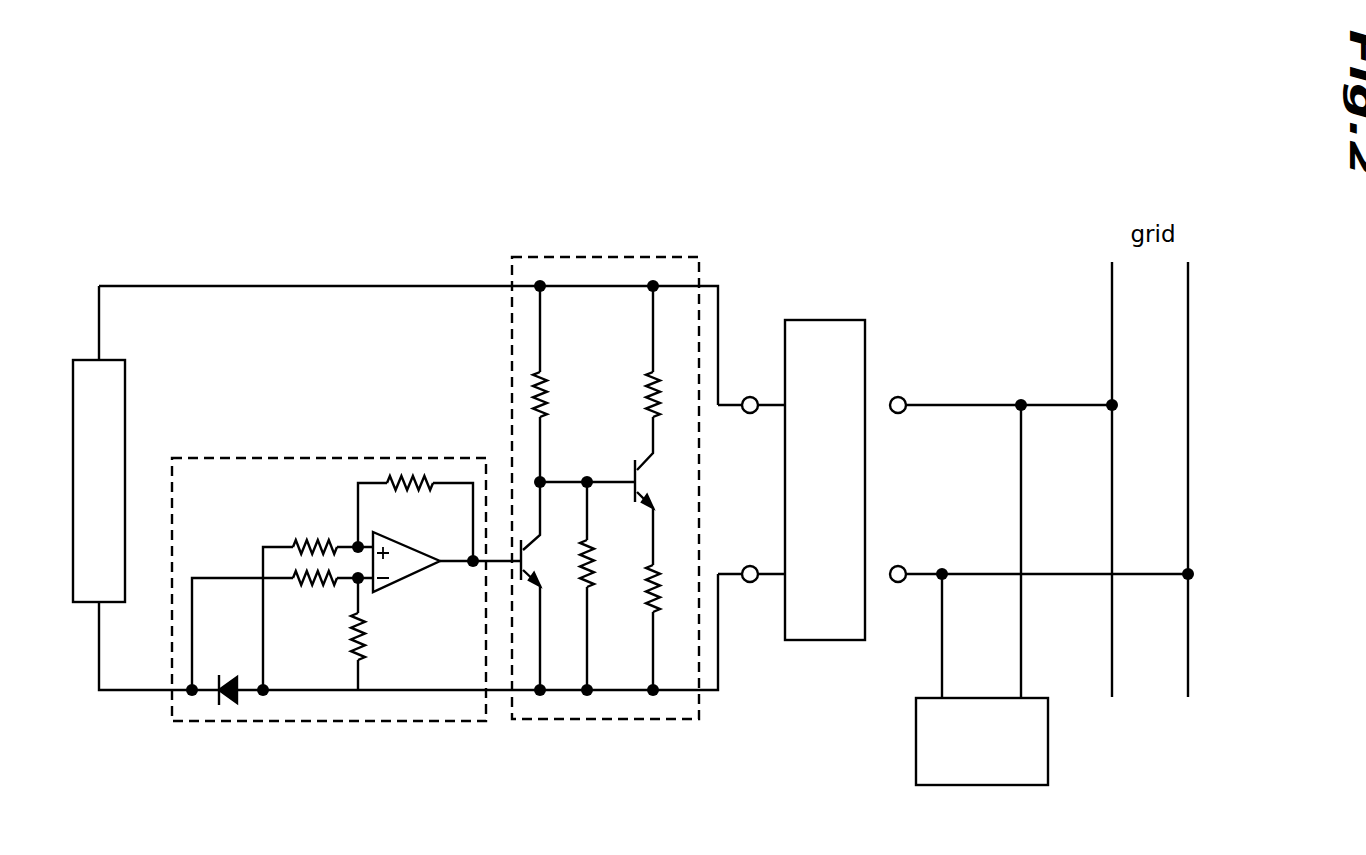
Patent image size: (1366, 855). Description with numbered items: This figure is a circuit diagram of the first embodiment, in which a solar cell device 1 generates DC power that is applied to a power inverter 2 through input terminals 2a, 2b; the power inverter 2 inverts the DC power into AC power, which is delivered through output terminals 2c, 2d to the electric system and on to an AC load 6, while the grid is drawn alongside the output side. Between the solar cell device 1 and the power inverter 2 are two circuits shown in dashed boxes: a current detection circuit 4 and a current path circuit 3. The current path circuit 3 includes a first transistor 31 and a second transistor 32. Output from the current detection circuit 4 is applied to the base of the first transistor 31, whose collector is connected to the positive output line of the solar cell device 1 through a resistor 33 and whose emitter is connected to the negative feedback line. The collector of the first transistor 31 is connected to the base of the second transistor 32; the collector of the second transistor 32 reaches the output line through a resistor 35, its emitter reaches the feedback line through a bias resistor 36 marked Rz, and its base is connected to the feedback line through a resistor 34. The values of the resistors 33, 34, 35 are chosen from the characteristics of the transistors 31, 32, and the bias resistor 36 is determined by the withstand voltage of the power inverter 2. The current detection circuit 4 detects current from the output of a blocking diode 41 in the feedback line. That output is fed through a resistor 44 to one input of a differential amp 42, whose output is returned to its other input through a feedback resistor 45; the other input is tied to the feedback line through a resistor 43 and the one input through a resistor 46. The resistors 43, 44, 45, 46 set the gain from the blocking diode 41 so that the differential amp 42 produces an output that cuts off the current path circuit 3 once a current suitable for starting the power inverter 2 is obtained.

The solar cell device 1 is at (90, 370).
The power inverter 2 is at (824, 336).
The input terminal 2a is at (748, 392).
The input terminal 2b is at (745, 591).
The output terminal 2c is at (897, 392).
The output terminal 2d is at (893, 591).
The current path circuit 3 is at (598, 722).
The current detection circuit 4 is at (338, 722).
The AC load 6 is at (970, 712).
The first transistor 31 is at (520, 548).
The second transistor 32 is at (636, 466).
The resistor 33 is at (549, 400).
The resistor 34 is at (597, 578).
The resistor 35 is at (661, 400).
The bias resistor 36 is at (661, 590).
The blocking diode 41 is at (224, 706).
The differential amp 42 is at (387, 532).
The resistor 43 is at (305, 545).
The resistor 44 is at (312, 586).
The feedback resistor 45 is at (412, 479).
The resistor 46 is at (365, 637).